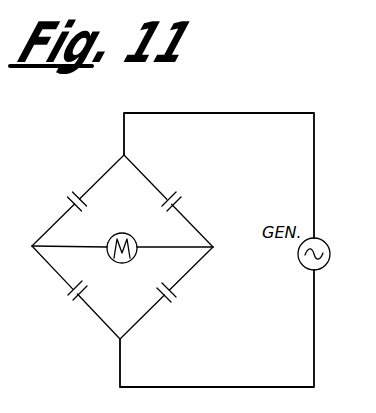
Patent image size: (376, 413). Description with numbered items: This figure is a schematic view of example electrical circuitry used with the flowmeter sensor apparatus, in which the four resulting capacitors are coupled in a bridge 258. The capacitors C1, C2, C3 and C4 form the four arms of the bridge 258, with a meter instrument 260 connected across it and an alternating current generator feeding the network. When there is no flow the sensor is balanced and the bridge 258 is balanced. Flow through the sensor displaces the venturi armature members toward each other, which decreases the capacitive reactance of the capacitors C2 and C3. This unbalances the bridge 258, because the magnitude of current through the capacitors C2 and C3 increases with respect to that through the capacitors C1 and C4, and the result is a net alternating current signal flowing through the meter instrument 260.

The bridge 258 is at (122, 261).
The meter instrument 260 is at (122, 237).
The capacitor C1 is at (168, 201).
The capacitor C2 is at (78, 200).
The capacitor C3 is at (166, 293).
The capacitor C4 is at (101, 331).